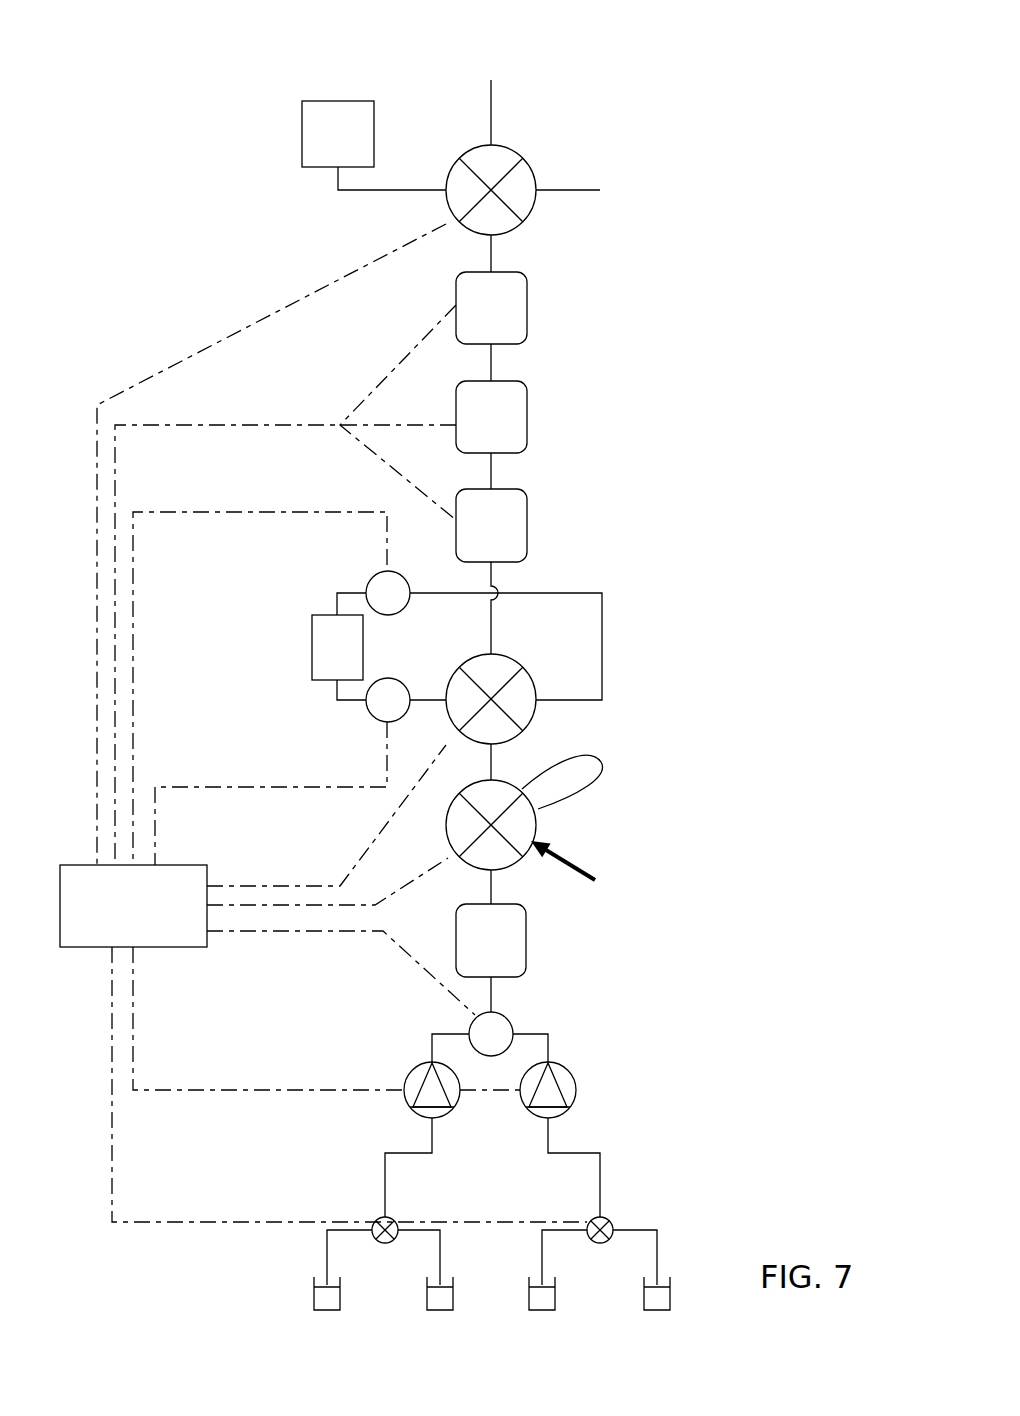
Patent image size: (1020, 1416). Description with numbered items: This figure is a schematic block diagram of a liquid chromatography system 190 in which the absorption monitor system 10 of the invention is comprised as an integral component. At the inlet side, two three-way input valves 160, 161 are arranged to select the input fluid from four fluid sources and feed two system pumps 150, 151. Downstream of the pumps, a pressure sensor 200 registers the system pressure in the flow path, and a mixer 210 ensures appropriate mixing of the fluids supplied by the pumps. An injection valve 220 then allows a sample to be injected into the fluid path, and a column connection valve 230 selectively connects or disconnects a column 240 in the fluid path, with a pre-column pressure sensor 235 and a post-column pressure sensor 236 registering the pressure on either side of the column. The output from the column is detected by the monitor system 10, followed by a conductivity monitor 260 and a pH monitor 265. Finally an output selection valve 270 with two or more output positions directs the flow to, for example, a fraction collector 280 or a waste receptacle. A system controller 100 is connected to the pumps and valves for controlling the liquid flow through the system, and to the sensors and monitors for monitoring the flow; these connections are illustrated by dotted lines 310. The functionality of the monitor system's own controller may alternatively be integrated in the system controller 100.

The liquid chromatography system 190 is at (125, 48).
The fraction collector 280 is at (282, 128).
The output selection valve 270 is at (545, 136).
The pH monitor 265 is at (560, 305).
The conductivity monitor 260 is at (560, 415).
The monitor system 10 is at (552, 507).
The post-column pressure sensor 236 is at (358, 577).
The column 240 is at (270, 649).
The pre-column pressure sensor 235 is at (361, 708).
The column connection valve 230 is at (574, 714).
The injection valve 220 is at (615, 822).
The mixer 210 is at (560, 939).
The pressure sensor 200 is at (519, 1009).
The system pump 150 is at (393, 1052).
The system pump 151 is at (607, 1059).
The 3-way input valve 160 is at (410, 1217).
The 3-way input valve 161 is at (622, 1204).
The system controller 100 is at (192, 954).
The dotted lines 310 is at (266, 873).